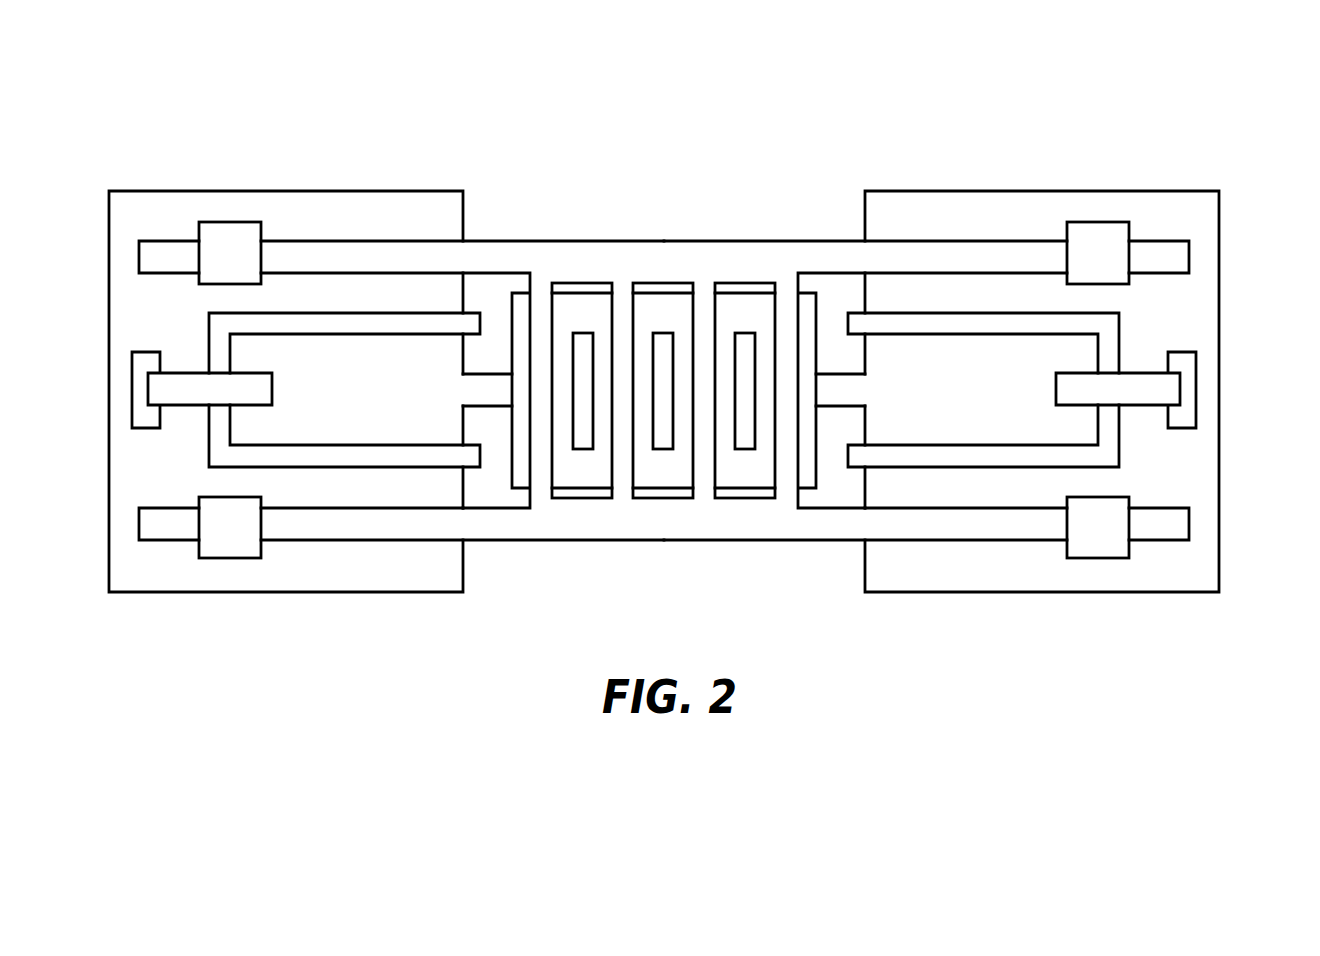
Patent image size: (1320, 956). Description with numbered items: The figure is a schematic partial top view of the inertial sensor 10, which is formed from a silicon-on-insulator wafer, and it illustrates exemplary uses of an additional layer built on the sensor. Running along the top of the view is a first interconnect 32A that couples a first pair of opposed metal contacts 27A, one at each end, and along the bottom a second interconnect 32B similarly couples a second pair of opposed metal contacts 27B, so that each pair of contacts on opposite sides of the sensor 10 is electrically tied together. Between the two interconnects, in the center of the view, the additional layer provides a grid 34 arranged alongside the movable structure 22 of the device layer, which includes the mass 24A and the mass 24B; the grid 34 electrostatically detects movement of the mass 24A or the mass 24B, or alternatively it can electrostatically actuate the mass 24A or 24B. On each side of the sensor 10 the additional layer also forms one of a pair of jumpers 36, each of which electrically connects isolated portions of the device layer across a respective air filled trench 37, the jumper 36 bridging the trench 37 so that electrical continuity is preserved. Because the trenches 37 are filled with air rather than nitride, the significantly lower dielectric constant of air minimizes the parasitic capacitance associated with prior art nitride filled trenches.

The sensor 10 is at (153, 116).
The movable structure 22 is at (704, 390).
The mass 24A is at (704, 390).
The mass 24B is at (664, 307).
The first pair of opposed metal contacts 27A is at (217, 235).
The second pair of opposed metal contacts 27B is at (212, 542).
The first interconnect 32A is at (523, 253).
The second interconnect 32B is at (527, 526).
The grid 34 is at (585, 293).
The jumpers 36 is at (195, 398).
The air filled trenches 37 is at (217, 347).